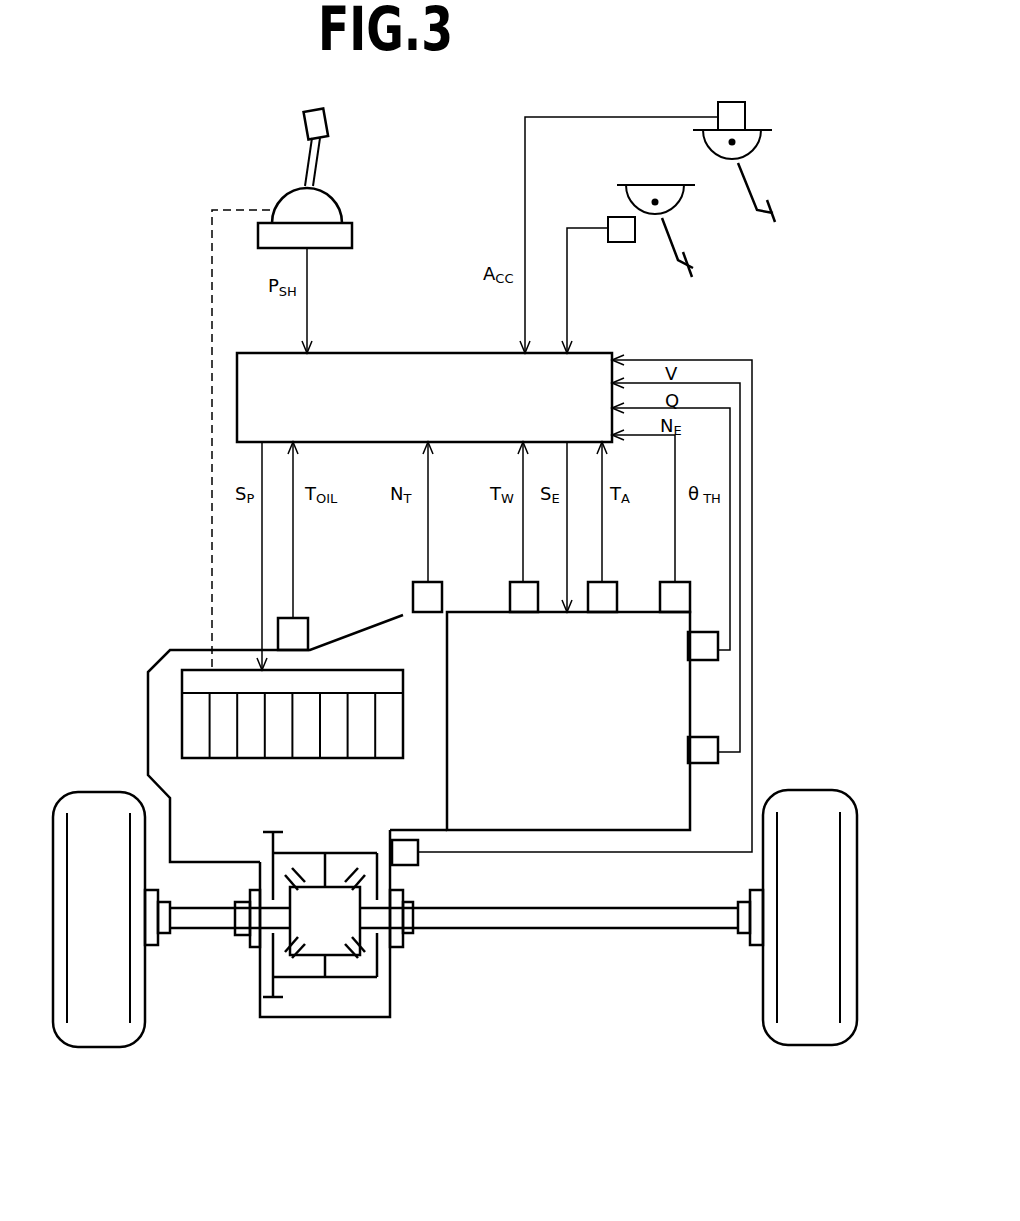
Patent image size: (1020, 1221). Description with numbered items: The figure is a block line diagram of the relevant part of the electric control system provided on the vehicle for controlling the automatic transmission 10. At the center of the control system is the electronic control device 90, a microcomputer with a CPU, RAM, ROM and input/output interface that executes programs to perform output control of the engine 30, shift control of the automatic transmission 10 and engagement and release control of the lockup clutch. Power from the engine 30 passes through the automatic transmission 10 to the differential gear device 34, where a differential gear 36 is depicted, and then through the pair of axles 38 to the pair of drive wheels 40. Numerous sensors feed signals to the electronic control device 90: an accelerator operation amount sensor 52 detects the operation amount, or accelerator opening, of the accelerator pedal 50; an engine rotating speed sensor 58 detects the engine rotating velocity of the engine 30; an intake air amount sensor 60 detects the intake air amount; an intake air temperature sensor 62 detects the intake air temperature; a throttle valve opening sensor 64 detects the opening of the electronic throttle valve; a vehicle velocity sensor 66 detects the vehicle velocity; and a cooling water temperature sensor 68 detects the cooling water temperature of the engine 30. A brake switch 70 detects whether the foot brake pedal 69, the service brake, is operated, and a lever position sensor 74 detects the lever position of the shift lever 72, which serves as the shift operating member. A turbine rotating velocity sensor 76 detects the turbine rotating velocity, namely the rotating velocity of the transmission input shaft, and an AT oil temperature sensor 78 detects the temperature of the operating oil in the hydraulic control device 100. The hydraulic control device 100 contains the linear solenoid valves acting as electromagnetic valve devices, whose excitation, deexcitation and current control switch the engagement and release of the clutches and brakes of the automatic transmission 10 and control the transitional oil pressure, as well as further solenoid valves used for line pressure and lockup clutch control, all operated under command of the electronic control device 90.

The automatic transmission 10 is at (163, 727).
The engine 30 is at (475, 625).
The differential gear device 34 is at (374, 988).
The differential gear 36 is at (280, 1000).
The axles 38 is at (195, 915).
The drive wheels 40 is at (100, 1030).
The accelerator pedal 50 is at (780, 217).
The accelerator operation amount sensor 52 is at (730, 110).
The engine rotating speed sensor 58 is at (707, 660).
The intake air amount sensor 60 is at (707, 763).
The intake air temperature sensor 62 is at (605, 598).
The throttle valve opening sensor 64 is at (680, 598).
The vehicle velocity sensor 66 is at (412, 855).
The cooling water temperature sensor 68 is at (515, 598).
The foot brake pedal 69 is at (697, 270).
The brake switch 70 is at (622, 242).
The shift lever 72 is at (318, 151).
The lever position sensor 74 is at (340, 237).
The turbine rotating velocity sensor 76 is at (420, 598).
The AT oil temperature sensor 78 is at (320, 618).
The electronic control device 90 is at (393, 353).
The hydraulic control device 100 is at (188, 681).